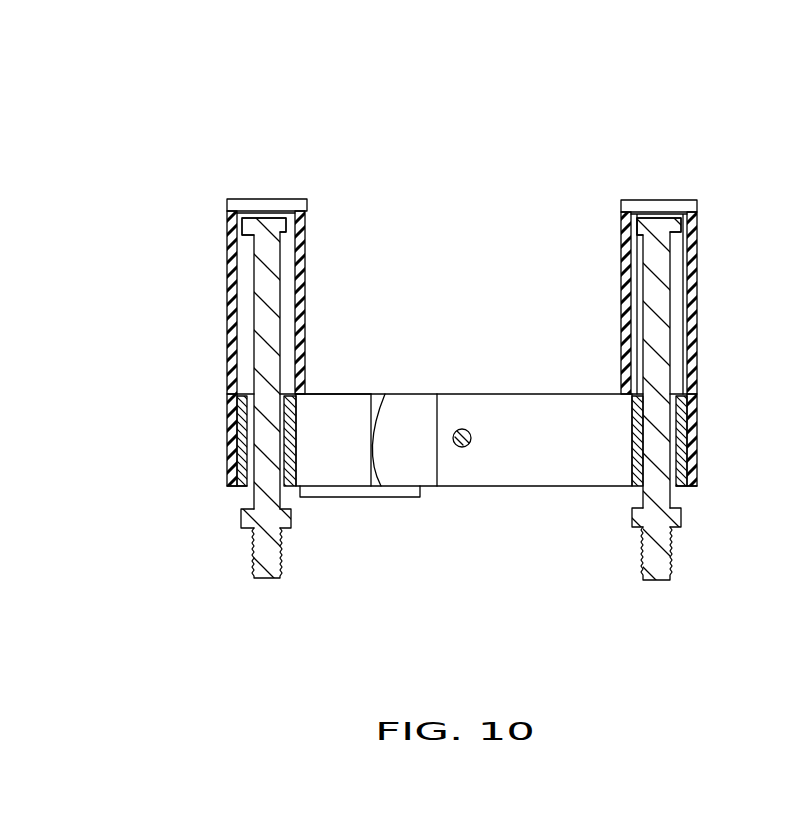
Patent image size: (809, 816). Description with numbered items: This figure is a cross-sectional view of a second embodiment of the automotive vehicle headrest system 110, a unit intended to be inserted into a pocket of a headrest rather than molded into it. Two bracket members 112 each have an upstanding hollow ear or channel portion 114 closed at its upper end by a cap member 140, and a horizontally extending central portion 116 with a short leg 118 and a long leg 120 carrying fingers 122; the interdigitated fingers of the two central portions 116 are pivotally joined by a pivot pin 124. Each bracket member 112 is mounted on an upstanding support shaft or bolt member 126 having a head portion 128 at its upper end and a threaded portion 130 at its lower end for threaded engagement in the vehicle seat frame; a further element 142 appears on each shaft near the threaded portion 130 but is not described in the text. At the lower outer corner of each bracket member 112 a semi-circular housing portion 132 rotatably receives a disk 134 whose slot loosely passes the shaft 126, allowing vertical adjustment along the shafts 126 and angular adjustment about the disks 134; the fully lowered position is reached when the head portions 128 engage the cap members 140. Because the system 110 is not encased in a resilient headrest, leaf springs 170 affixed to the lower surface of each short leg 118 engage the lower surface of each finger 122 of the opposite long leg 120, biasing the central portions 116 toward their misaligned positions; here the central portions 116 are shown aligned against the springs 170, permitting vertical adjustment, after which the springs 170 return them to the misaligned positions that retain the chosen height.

The automotive vehicle headrest system 110 is at (563, 193).
The bracket member 112 is at (228, 393).
The upstanding ear or channel portion 114 is at (305, 272).
The horizontally extending central portion 116 is at (475, 393).
The short leg 118 is at (345, 408).
The long leg 120 is at (553, 480).
The finger 122 is at (420, 475).
The pivot pin 124 is at (467, 447).
The upstanding support shaft or bolt member 126 is at (258, 423).
The head portion 128 is at (283, 228).
The threaded portion 130 is at (254, 556).
The semi-circular housing portion 132 is at (230, 456).
The circular disk 134 is at (237, 478).
The cap member 140 is at (277, 199).
The nut 142 is at (287, 525).
The leaf spring 170 is at (377, 495).